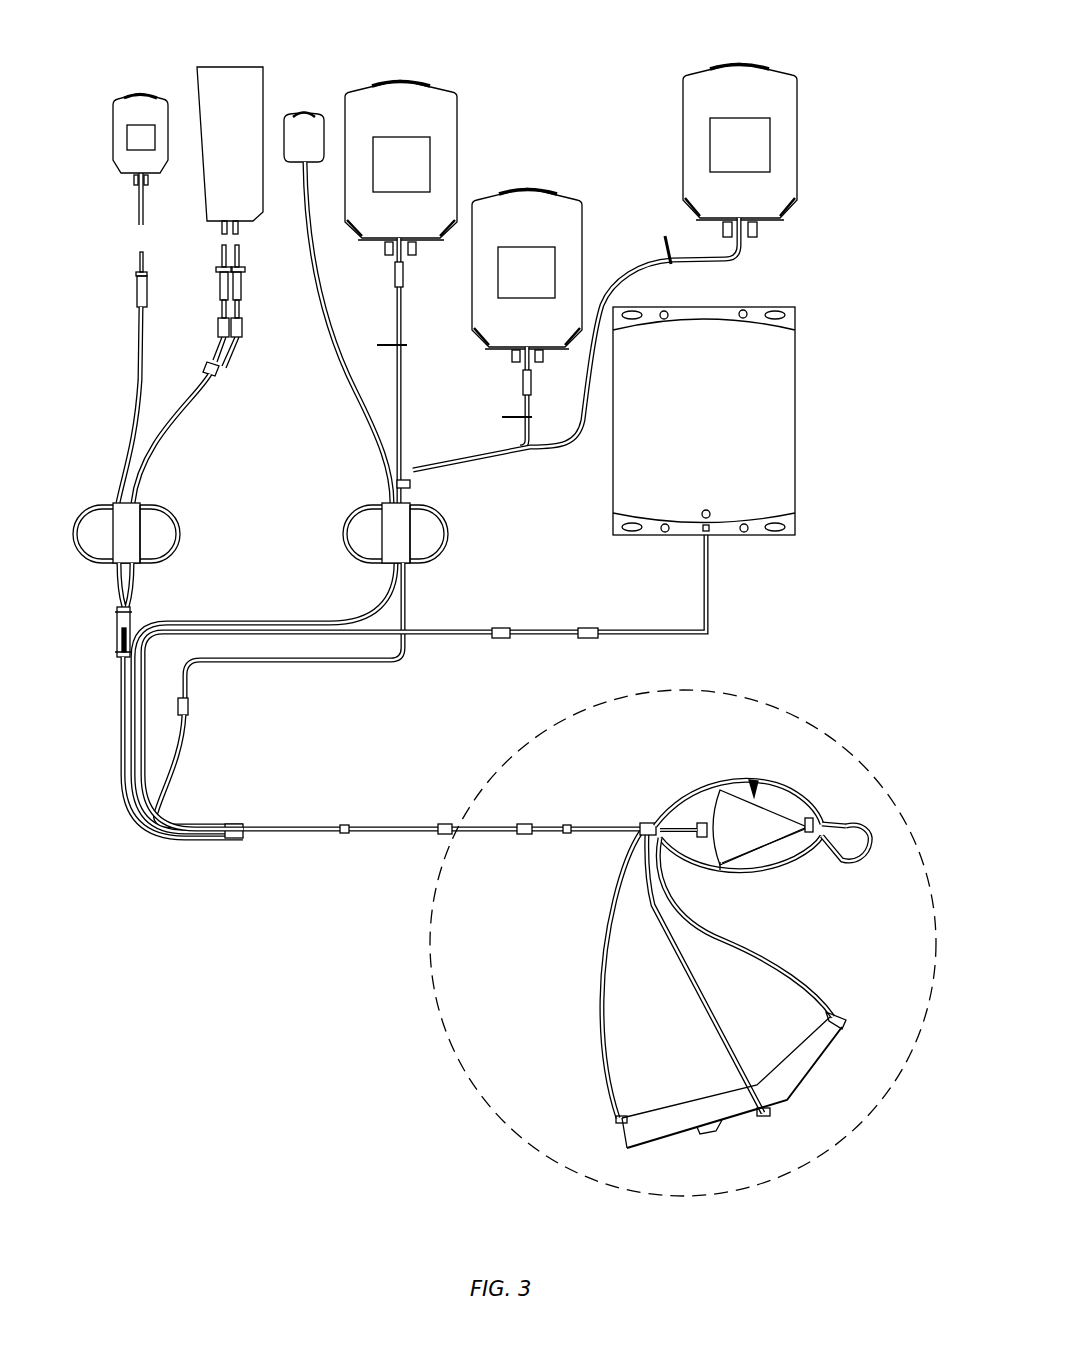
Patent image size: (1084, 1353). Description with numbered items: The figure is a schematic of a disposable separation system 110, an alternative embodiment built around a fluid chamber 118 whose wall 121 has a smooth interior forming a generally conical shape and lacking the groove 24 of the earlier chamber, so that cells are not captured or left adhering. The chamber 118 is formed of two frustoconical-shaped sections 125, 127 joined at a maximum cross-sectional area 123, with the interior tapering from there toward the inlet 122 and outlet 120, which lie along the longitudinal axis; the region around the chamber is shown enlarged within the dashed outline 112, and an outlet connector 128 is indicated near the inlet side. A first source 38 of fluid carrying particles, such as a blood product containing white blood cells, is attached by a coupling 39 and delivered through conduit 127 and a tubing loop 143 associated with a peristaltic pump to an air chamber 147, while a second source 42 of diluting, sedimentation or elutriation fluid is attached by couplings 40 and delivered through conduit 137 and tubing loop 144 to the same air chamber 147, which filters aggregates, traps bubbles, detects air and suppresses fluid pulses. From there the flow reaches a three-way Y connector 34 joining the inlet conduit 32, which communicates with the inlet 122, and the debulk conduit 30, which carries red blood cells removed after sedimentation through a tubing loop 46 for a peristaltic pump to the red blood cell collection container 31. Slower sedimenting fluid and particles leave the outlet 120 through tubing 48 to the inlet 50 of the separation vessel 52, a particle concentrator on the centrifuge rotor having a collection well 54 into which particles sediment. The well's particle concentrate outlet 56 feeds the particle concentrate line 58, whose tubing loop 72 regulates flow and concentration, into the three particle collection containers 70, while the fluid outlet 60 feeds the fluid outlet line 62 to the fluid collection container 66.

The disposable separation system 110 is at (590, 82).
The first source 38 is at (114, 168).
The coupling 39 is at (137, 268).
The conduit 127 is at (138, 392).
The second source 42 is at (258, 105).
The couplings 40 is at (235, 262).
The conduit 137 is at (190, 398).
The red blood cell collection container 31 is at (318, 175).
The debulk conduit 30 is at (348, 352).
The particle collection containers 70 is at (455, 132).
The tubing loop 143 is at (90, 520).
The tubing loop 144 is at (168, 563).
The air chamber 147 is at (117, 632).
The tubing loop 46 is at (376, 520).
The tubing loop 72 is at (446, 540).
The particle concentrate line 58 is at (410, 630).
The fluid outlet line 62 is at (558, 633).
The fluid collection container 66 is at (795, 415).
The separation chamber assembly 112 is at (792, 700).
The frustoconical-shaped section 125 is at (655, 822).
The outlet 120 is at (700, 822).
The groove 24 is at (720, 790).
The fluid chamber 118 is at (760, 778).
The inlet 122 is at (793, 778).
The outlet connector 128 is at (810, 810).
The Y connector 34 is at (835, 822).
The inlet conduit 32 is at (852, 862).
The wall 121 is at (775, 855).
The maximum cross-sectional area 123 is at (720, 866).
The conduit tubing 48 is at (712, 942).
The separation vessel 52 is at (822, 1083).
The inlet 50 is at (844, 1018).
The fluid outlet 60 is at (615, 1122).
The particle concentrate outlet 56 is at (771, 1112).
The collection well 54 is at (724, 1134).